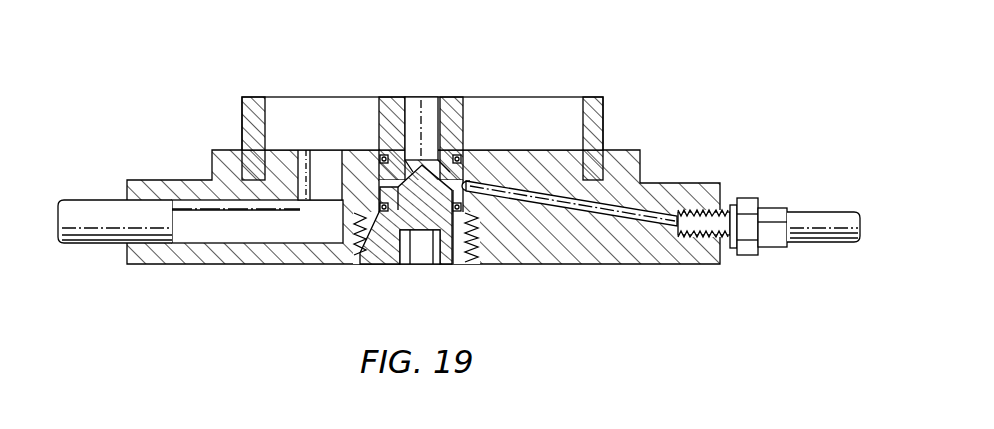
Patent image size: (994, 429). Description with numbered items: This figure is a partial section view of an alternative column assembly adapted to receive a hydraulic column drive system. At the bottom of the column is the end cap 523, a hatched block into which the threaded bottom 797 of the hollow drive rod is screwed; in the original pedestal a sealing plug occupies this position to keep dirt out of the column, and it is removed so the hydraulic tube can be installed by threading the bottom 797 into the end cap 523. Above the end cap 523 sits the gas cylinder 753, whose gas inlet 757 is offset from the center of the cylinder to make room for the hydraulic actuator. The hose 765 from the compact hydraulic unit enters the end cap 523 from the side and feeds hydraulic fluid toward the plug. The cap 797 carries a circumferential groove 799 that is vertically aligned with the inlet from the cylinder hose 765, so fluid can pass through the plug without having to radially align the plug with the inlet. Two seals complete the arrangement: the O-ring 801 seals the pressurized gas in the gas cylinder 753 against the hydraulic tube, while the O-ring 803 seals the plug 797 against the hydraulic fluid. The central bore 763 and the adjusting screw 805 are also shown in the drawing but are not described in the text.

The bottom end cap 523 is at (620, 243).
The gas inlet 757 is at (192, 222).
The gas cylinder 753 is at (606, 118).
The O-ring 801 is at (403, 115).
The central bore 763 is at (432, 92).
The threaded bottom 797 is at (378, 250).
The O-ring 803 is at (500, 225).
The circumferential groove 799 is at (463, 182).
The adjusting screw 805 is at (666, 212).
The hose 765 is at (808, 210).